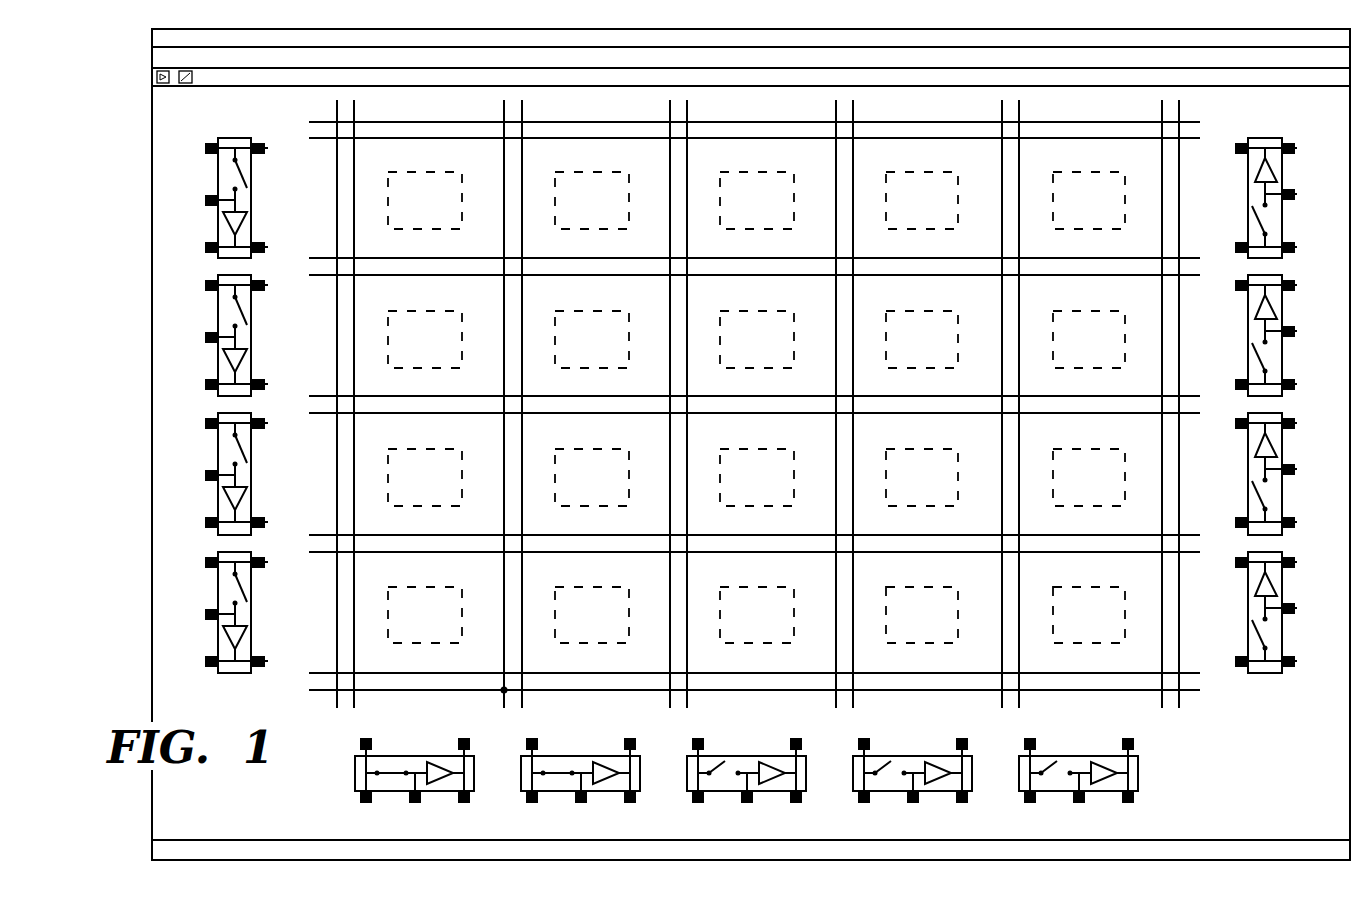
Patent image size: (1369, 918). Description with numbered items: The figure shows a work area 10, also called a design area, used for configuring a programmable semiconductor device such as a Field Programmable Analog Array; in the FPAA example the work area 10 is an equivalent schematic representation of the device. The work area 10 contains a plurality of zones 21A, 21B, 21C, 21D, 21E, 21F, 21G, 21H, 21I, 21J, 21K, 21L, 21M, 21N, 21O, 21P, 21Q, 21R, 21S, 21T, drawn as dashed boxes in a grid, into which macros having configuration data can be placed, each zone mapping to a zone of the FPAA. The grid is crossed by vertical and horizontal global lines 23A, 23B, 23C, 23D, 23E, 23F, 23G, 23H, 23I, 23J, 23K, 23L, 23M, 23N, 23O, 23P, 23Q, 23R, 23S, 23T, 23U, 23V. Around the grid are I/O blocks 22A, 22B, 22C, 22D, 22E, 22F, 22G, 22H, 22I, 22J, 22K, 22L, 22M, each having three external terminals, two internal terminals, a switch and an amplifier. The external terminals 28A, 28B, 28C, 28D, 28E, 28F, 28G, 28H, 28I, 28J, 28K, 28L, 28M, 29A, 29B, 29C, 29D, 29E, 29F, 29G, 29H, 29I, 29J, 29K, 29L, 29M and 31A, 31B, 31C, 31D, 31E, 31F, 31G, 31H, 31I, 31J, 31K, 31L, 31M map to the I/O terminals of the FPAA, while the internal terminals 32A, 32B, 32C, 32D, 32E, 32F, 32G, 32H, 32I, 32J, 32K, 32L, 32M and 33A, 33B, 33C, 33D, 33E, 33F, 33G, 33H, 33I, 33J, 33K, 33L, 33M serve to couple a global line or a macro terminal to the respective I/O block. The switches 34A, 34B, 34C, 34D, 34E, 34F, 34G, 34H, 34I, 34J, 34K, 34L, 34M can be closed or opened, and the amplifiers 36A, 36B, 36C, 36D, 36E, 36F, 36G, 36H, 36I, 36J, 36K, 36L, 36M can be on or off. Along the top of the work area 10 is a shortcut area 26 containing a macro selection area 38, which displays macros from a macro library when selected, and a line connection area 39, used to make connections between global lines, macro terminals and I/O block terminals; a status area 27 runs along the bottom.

The work area 10 is at (133, 815).
The shortcut area 26 is at (153, 73).
The status area 27 is at (158, 853).
The macro selection area 38 is at (162, 84).
The line connection area 39 is at (186, 84).
The zone 21A is at (473, 182).
The zone 21B is at (473, 322).
The zone 21C is at (372, 490).
The zone 21D is at (371, 597).
The zone 21E is at (639, 597).
The zone 21F is at (655, 482).
The zone 21G is at (643, 322).
The zone 21H is at (643, 182).
The zone 21I is at (704, 182).
The zone 21J is at (704, 322).
The zone 21K is at (818, 480).
The zone 21L is at (818, 636).
The zone 21M is at (983, 602).
The zone 21N is at (980, 479).
The zone 21O is at (869, 322).
The zone 21P is at (869, 182).
The zone 21Q is at (1034, 180).
The zone 21R is at (1034, 322).
The zone 21S is at (1034, 461).
The zone 21T is at (1034, 600).
The I/O block 22A is at (218, 176).
The I/O block 22B is at (218, 313).
The I/O block 22C is at (218, 451).
The I/O block 22D is at (218, 590).
The I/O block 22E is at (355, 773).
The I/O block 22F is at (559, 791).
The I/O block 22G is at (725, 791).
The I/O block 22H is at (891, 791).
The I/O block 22I is at (1057, 791).
The I/O block 22J is at (1282, 630).
The I/O block 22K is at (1282, 491).
The I/O block 22L is at (1282, 353).
The I/O block 22M is at (1282, 216).
The global line 23A is at (1150, 691).
The global line 23B is at (1136, 673).
The global line 23C is at (1138, 553).
The global line 23D is at (1136, 535).
The global line 23E is at (1138, 414).
The global line 23F is at (1136, 396).
The global line 23G is at (1138, 276).
The global line 23H is at (1136, 258).
The global line 23I is at (1138, 139).
The global line 23J is at (929, 121).
The global line 23K is at (337, 110).
The global line 23L is at (355, 106).
The global line 23M is at (504, 110).
The global line 23N is at (523, 106).
The global line 23O is at (670, 110).
The global line 23P is at (688, 106).
The global line 23Q is at (836, 110).
The global line 23R is at (854, 106).
The global line 23S is at (1002, 110).
The global line 23T is at (1020, 106).
The global line 23U is at (1162, 110).
The global line 23V is at (1180, 106).
The external terminal 28A is at (205, 148).
The external terminal 28B is at (205, 285).
The external terminal 28C is at (205, 423).
The external terminal 28D is at (205, 562).
The external terminal 28E is at (360, 798).
The external terminal 28F is at (526, 797).
The external terminal 28G is at (692, 797).
The external terminal 28H is at (858, 797).
The external terminal 28I is at (1024, 797).
The external terminal 28J is at (1296, 661).
The external terminal 28K is at (1296, 522).
The external terminal 28L is at (1296, 384).
The external terminal 28M is at (1296, 247).
The external terminal 29A is at (205, 200).
The external terminal 29B is at (205, 337).
The external terminal 29C is at (205, 475).
The external terminal 29D is at (205, 614).
The external terminal 29E is at (417, 803).
The external terminal 29F is at (581, 803).
The external terminal 29G is at (747, 803).
The external terminal 29H is at (913, 803).
The external terminal 29I is at (1079, 803).
The external terminal 29J is at (1296, 608).
The external terminal 29K is at (1296, 469).
The external terminal 29L is at (1296, 331).
The external terminal 29M is at (1296, 194).
The external terminal 31A is at (205, 247).
The external terminal 31B is at (205, 384).
The external terminal 31C is at (205, 522).
The external terminal 31D is at (205, 661).
The external terminal 31E is at (464, 803).
The external terminal 31F is at (630, 803).
The external terminal 31G is at (796, 803).
The external terminal 31H is at (962, 803).
The external terminal 31I is at (1128, 803).
The external terminal 31J is at (1296, 562).
The external terminal 31K is at (1296, 423).
The external terminal 31L is at (1296, 285).
The external terminal 31M is at (1296, 148).
The internal terminal 32A is at (266, 148).
The internal terminal 32B is at (266, 285).
The internal terminal 32C is at (266, 423).
The internal terminal 32D is at (266, 562).
The internal terminal 32E is at (360, 744).
The internal terminal 32F is at (526, 745).
The internal terminal 32G is at (692, 745).
The internal terminal 32H is at (858, 745).
The internal terminal 32I is at (1024, 745).
The internal terminal 32J is at (1234, 661).
The internal terminal 32K is at (1234, 522).
The internal terminal 32L is at (1234, 384).
The internal terminal 32M is at (1235, 246).
The internal terminal 33A is at (266, 247).
The internal terminal 33B is at (266, 384).
The internal terminal 33C is at (266, 522).
The internal terminal 33D is at (266, 661).
The internal terminal 33E is at (467, 742).
The internal terminal 33F is at (636, 741).
The internal terminal 33G is at (802, 741).
The internal terminal 33H is at (968, 741).
The internal terminal 33I is at (1134, 744).
The internal terminal 33J is at (1234, 562).
The internal terminal 33K is at (1234, 423).
The internal terminal 33L is at (1234, 285).
The internal terminal 33M is at (1240, 143).
The switch 34A is at (243, 174).
The switch 34B is at (243, 311).
The switch 34C is at (243, 449).
The switch 34D is at (243, 588).
The switch 34E is at (393, 776).
The switch 34F is at (555, 772).
The switch 34G is at (722, 762).
The switch 34H is at (888, 762).
The switch 34I is at (1054, 762).
The switch 34J is at (1259, 636).
The switch 34K is at (1259, 497).
The switch 34L is at (1259, 359).
The switch 34M is at (1259, 222).
The amplifier 36A is at (247, 223).
The amplifier 36B is at (247, 360).
The amplifier 36C is at (247, 498).
The amplifier 36D is at (247, 637).
The amplifier 36E is at (438, 763).
The amplifier 36F is at (604, 763).
The amplifier 36G is at (770, 763).
The amplifier 36H is at (936, 763).
The amplifier 36I is at (1102, 763).
The amplifier 36J is at (1256, 589).
The amplifier 36K is at (1256, 450).
The amplifier 36L is at (1256, 312).
The amplifier 36M is at (1256, 175).